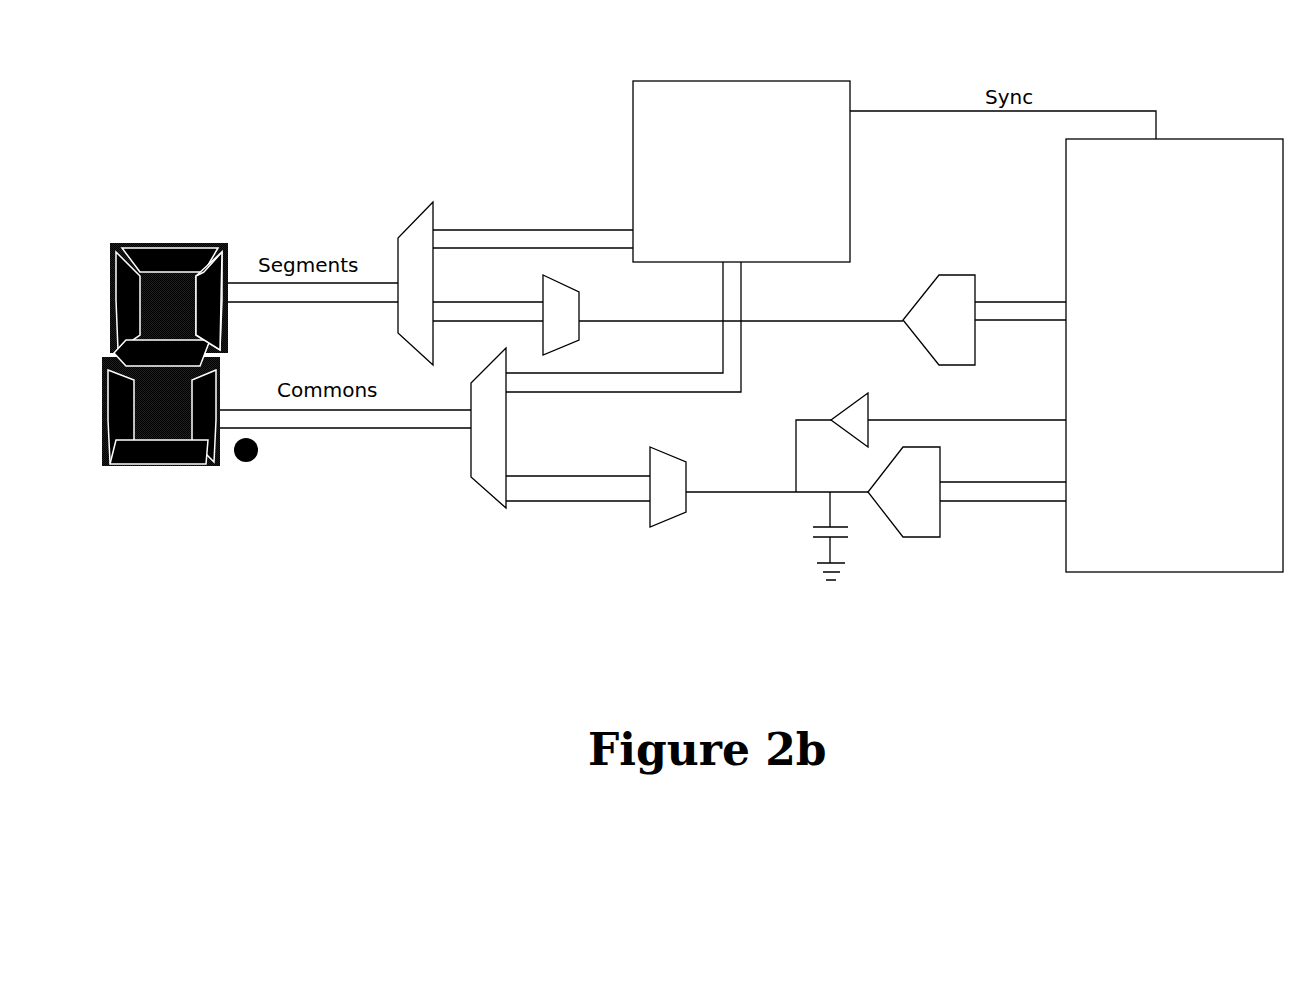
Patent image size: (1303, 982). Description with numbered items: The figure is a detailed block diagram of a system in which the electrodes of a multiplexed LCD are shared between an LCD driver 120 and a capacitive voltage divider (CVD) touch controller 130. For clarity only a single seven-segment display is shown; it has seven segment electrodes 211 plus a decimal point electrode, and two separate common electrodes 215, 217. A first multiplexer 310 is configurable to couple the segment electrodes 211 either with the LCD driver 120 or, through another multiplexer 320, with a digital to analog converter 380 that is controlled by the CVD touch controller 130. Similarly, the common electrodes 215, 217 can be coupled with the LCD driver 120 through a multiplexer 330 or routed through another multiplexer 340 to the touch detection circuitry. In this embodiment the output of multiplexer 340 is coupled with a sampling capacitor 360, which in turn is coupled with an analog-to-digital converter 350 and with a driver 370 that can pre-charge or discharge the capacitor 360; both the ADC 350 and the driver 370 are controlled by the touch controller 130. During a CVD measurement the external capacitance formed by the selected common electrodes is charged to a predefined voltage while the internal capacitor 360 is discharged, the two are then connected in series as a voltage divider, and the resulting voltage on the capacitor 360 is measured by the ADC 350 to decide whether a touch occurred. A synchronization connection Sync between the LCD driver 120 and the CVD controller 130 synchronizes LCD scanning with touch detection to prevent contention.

The LCD driver 120 is at (683, 81).
The CVD touch controller 130 is at (1245, 139).
The segment electrodes 211 is at (153, 243).
The common electrode 215 is at (98, 370).
The common electrode 217 is at (217, 245).
The first multiplexer 310 is at (433, 203).
The multiplexer 320 is at (552, 320).
The multiplexer 330 is at (487, 442).
The multiplexer 340 is at (660, 478).
The analog-to-digital converter 350 is at (930, 525).
The sampling capacitor 360 is at (828, 526).
The driver 370 is at (847, 405).
The digital to analog converter 380 is at (955, 282).